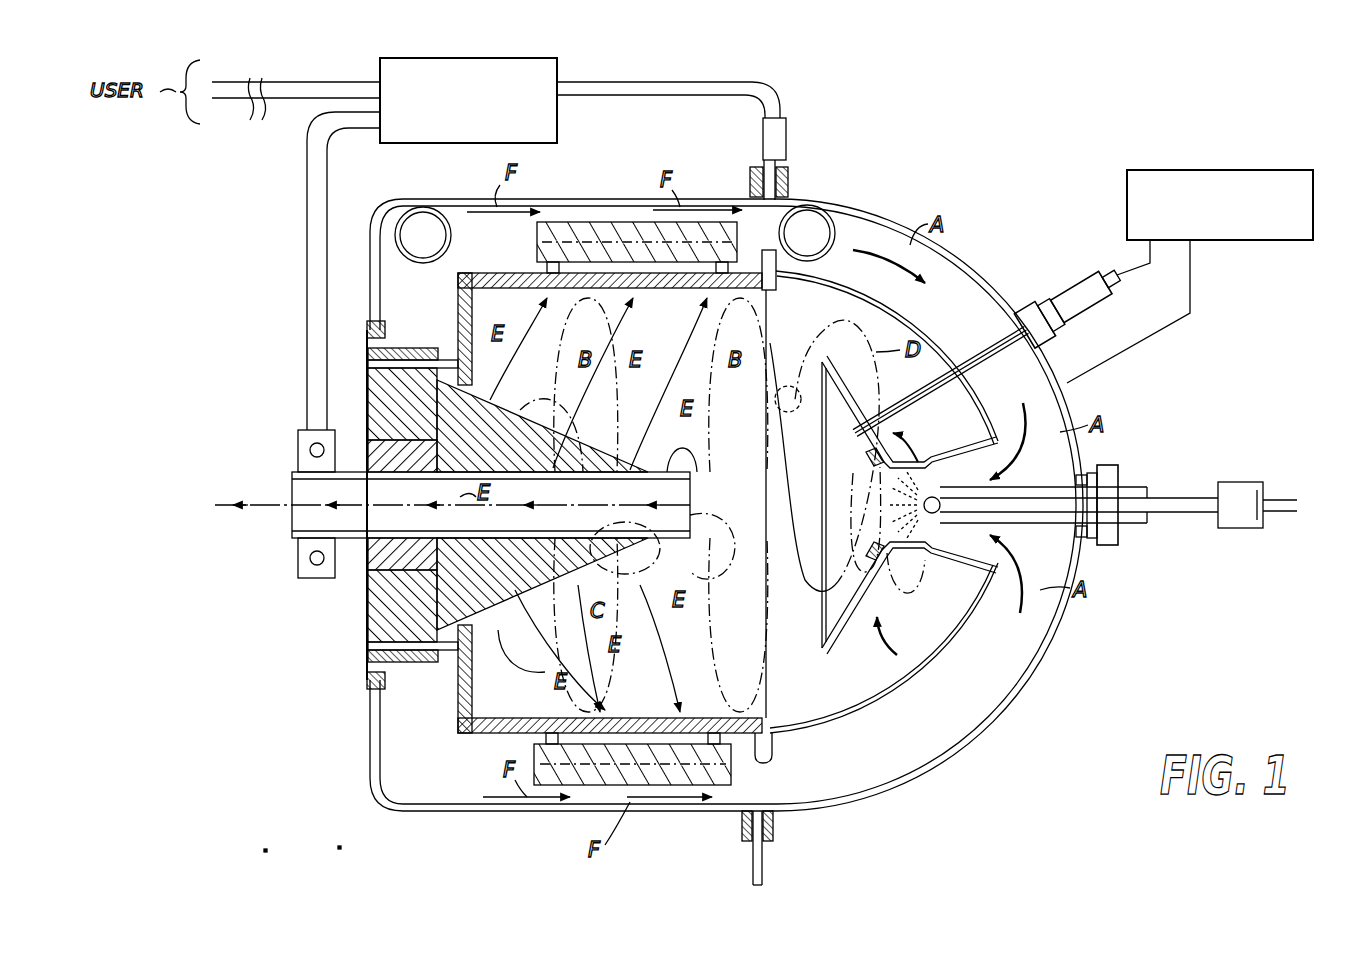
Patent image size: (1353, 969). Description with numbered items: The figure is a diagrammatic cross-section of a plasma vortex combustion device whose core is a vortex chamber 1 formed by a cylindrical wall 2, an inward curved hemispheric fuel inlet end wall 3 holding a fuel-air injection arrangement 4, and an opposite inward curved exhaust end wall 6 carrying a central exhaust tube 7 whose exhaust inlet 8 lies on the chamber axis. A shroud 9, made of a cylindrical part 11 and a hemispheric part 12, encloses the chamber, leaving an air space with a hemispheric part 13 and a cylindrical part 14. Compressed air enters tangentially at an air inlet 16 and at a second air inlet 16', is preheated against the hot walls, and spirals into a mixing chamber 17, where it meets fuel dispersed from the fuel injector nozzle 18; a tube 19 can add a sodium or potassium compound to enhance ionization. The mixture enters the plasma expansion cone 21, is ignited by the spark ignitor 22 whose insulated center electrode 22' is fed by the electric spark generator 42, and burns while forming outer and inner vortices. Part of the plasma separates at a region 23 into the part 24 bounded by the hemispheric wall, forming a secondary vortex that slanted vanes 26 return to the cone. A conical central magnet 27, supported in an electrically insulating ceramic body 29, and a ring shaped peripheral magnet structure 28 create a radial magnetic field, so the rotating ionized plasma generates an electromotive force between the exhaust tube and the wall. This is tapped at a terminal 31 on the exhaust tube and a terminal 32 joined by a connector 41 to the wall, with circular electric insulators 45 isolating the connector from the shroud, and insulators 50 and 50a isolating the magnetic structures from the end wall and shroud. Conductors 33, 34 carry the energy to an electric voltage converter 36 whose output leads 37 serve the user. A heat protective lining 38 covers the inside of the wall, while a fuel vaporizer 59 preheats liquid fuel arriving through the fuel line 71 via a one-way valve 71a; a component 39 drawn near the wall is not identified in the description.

The vortex chamber 1 is at (742, 654).
The cylindrical wall 2 is at (503, 740).
The hemispheric fuel inlet end wall 3 is at (958, 645).
The fuel-air injection arrangement 4 is at (906, 651).
The exhaust end wall 6 is at (457, 290).
The exhaust tube 7 is at (296, 522).
The exhaust inlet 8 is at (668, 504).
The shroud 9 is at (700, 800).
The cylindrical part of shroud 11 is at (433, 812).
The hemispheric part of shroud 12 is at (948, 760).
The hemispheric part of air space 13 is at (950, 720).
The cylindrical part of air space 14 is at (441, 780).
The air inlet 16 is at (847, 223).
The second air inlet 16' is at (423, 212).
The mixing chamber 17 is at (917, 450).
The fuel injector nozzle 18 is at (933, 545).
The tube 19 is at (1148, 488).
The plasma expansion cone 21 is at (832, 378).
The spark ignitor 22 is at (1017, 345).
The insulated center electrode 22' is at (1042, 356).
The region 23 is at (778, 408).
The part of the vortex chamber 24 is at (862, 677).
The slanted vanes 26 is at (870, 460).
The conical central magnet 27 is at (497, 408).
The peripheral magnet structure 28 is at (537, 234).
The electrically insulating ceramic body 29 is at (368, 560).
The terminal 31 is at (298, 573).
The terminal 32 is at (787, 125).
The conductor 33 is at (305, 358).
The conductor 34 is at (653, 88).
The electric voltage converter 36 is at (557, 125).
The output leads 37 is at (296, 115).
The heat protective lining 38 is at (672, 290).
The flange 39 is at (770, 240).
The connector 41 is at (760, 142).
The electric spark generator 42 is at (1228, 170).
The circular electric insulators 45 is at (750, 176).
The circular electric insulator 50 is at (438, 347).
The circular electric insulator 50a is at (367, 330).
The fuel vaporizer 59 is at (1242, 490).
The fuel line 71 is at (1290, 514).
The one-way valve 71a is at (1245, 530).